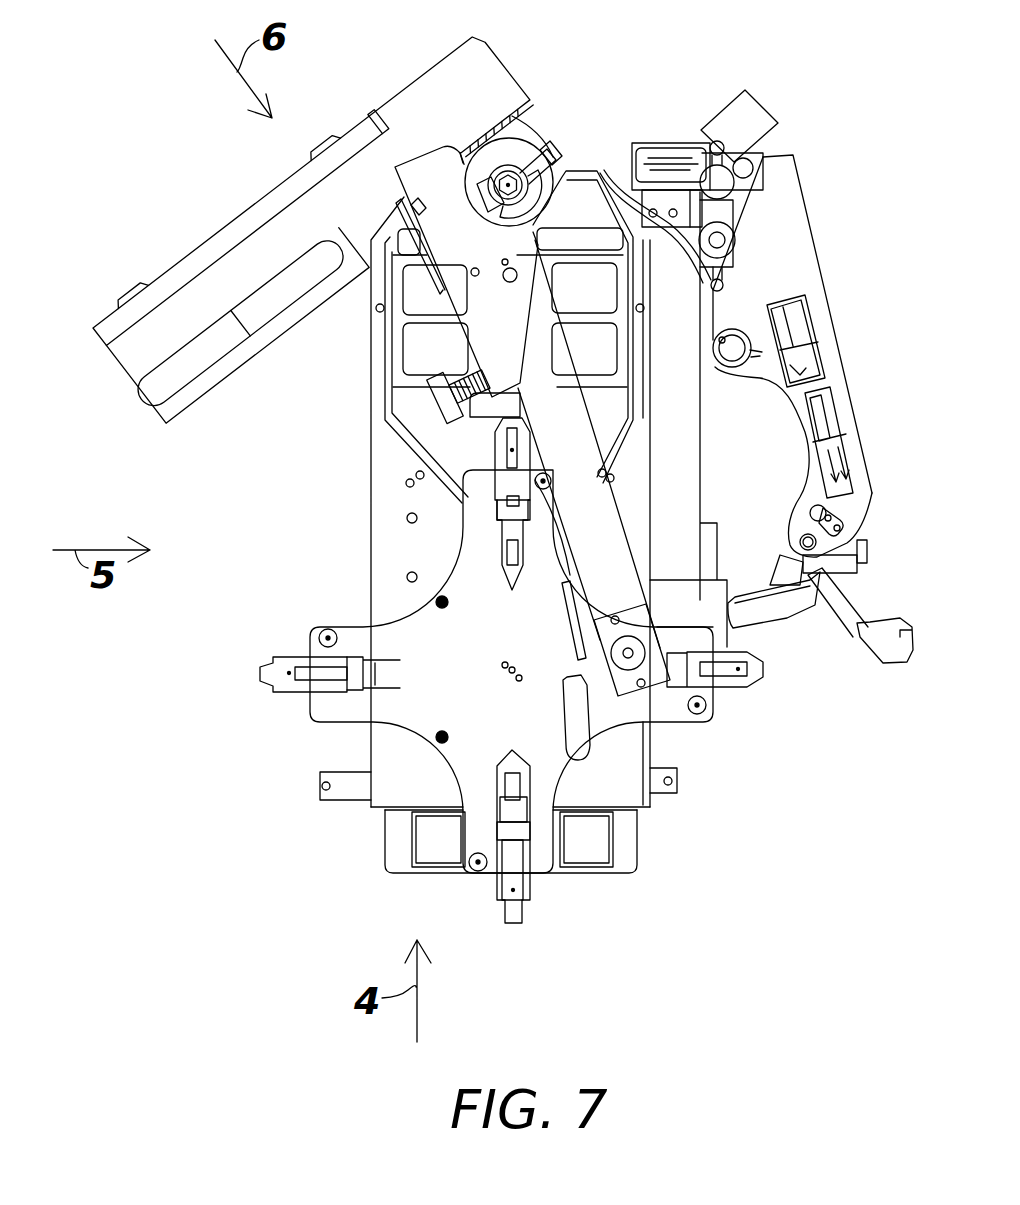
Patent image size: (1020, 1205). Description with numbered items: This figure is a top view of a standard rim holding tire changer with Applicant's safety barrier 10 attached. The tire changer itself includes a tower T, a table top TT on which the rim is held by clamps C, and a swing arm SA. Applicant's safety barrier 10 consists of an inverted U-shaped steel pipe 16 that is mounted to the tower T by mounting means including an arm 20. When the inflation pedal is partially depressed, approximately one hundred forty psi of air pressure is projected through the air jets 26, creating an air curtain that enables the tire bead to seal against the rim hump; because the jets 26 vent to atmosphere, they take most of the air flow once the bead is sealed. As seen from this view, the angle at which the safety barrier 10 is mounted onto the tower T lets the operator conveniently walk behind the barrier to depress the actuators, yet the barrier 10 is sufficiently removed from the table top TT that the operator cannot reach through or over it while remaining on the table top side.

The safety barrier 10 is at (170, 199).
The inverted U-shaped steel pipe 16 is at (195, 362).
The arm 20 is at (368, 214).
The tower T is at (500, 150).
The swing arm SA is at (575, 437).
The table top TT is at (488, 704).
The clamps C is at (504, 590).
The air jets 26 is at (328, 627).